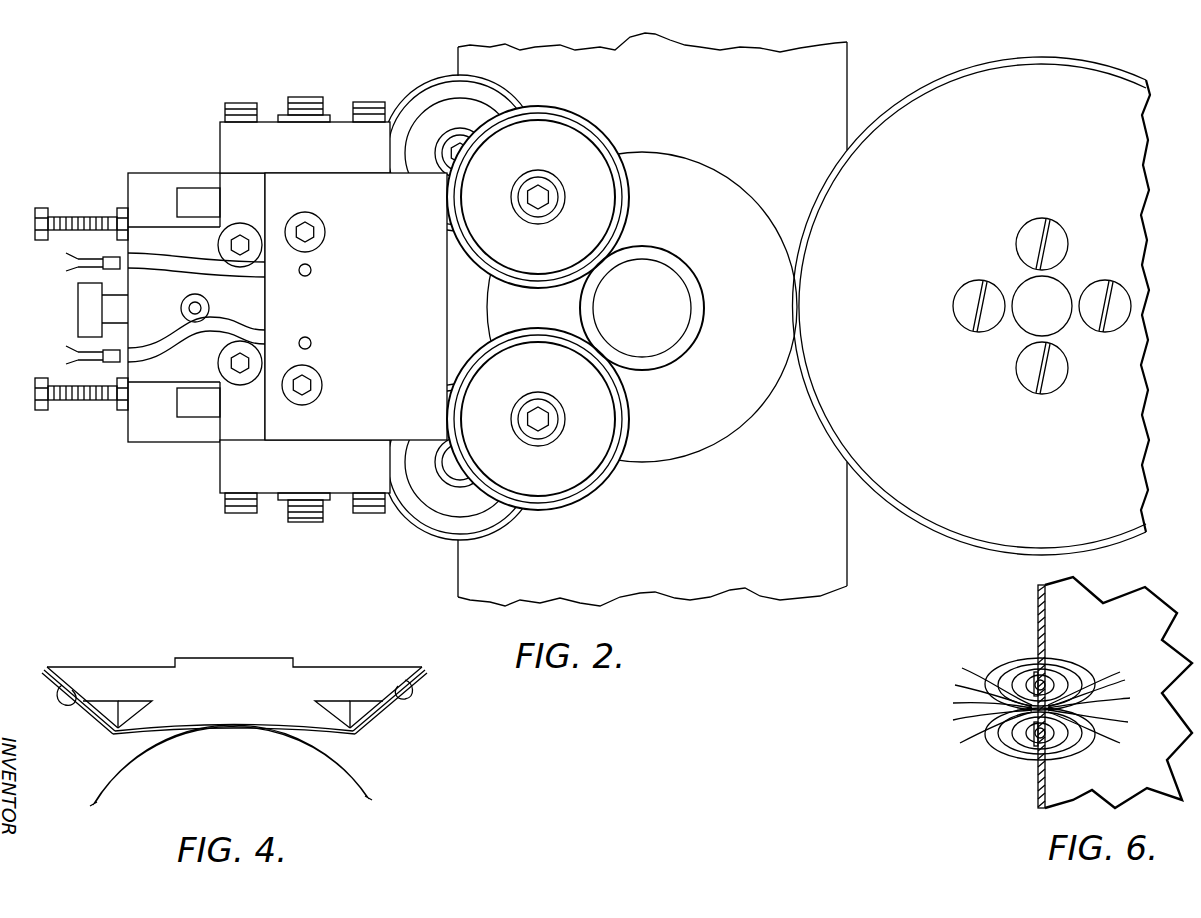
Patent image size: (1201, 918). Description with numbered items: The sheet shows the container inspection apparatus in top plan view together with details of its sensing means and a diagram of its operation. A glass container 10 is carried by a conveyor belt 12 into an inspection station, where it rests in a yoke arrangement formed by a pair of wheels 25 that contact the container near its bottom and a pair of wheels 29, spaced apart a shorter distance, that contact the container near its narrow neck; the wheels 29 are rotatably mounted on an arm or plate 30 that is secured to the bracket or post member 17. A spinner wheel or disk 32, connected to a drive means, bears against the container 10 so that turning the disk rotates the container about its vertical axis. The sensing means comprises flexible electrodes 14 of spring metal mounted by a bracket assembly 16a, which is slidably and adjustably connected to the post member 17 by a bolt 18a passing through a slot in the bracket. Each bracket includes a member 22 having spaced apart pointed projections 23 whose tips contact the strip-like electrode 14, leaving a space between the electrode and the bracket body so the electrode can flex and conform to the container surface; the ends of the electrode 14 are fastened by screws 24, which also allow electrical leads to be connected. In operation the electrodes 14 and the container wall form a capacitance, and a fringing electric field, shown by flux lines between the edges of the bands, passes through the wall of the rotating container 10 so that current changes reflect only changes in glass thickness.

In FIG. 2, the container 10 is at (730, 180).
In FIG. 4, the container 10 is at (333, 767).
In FIG. 6, the container 10 is at (1033, 797).
In FIG. 2, the conveyor belt 12 is at (803, 572).
In FIG. 4, the electrodes 14 is at (337, 733).
In FIG. 6, the electrodes 14 is at (1037, 667).
In FIG. 2, the bracket assembly 16a is at (247, 140).
In FIG. 2, the bracket or post member 17 is at (160, 423).
In FIG. 2, the bolt 18a is at (300, 97).
In FIG. 4, the member 22 is at (252, 663).
In FIG. 4, the pointed projections 23 is at (148, 711).
In FIG. 4, the screws 24 is at (78, 707).
In FIG. 2, the wheels 25 is at (450, 118).
In FIG. 2, the wheels 29 is at (577, 155).
In FIG. 2, the arm or plate 30 is at (418, 263).
In FIG. 2, the spinner wheel or disk 32 is at (990, 523).